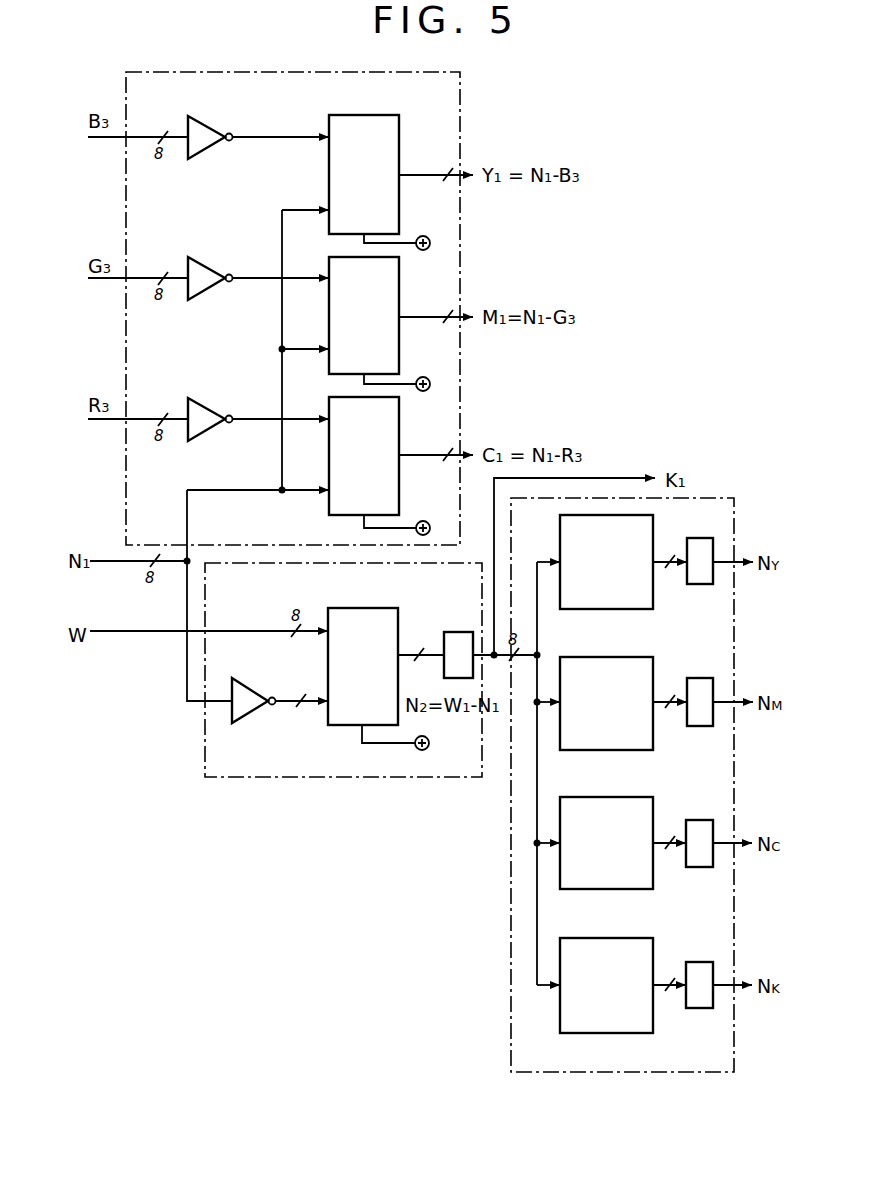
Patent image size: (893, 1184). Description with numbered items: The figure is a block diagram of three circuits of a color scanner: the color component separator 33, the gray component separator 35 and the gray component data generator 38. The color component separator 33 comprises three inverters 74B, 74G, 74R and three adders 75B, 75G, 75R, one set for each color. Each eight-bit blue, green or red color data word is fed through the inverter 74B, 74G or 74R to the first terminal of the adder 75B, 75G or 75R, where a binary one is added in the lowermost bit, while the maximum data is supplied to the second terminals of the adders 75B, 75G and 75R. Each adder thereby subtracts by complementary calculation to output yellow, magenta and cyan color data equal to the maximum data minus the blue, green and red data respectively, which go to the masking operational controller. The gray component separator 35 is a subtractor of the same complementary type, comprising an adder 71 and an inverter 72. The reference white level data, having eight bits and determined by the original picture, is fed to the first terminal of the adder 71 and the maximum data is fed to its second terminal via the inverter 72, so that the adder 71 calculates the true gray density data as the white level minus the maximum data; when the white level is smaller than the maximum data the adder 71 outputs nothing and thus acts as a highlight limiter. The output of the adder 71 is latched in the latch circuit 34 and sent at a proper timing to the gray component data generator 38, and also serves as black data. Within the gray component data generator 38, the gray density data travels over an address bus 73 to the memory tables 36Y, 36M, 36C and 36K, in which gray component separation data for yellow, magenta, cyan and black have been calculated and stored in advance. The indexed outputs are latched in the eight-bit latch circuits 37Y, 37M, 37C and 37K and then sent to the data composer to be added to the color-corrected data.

The color component separator 33 is at (462, 120).
The inverter 74B is at (204, 126).
The inverter 74G is at (204, 267).
The inverter 74R is at (204, 408).
The adder 75B is at (363, 115).
The adder 75G is at (399, 272).
The adder 75R is at (399, 423).
The gray component separator 35 is at (250, 778).
The adder 71 is at (366, 608).
The inverter 72 is at (250, 723).
The latch circuit 34 is at (458, 632).
The gray component data generator 38 is at (509, 890).
The address bus 73 is at (537, 787).
The memory table 36Y is at (651, 609).
The memory table 36M is at (648, 750).
The memory table 36C is at (648, 889).
The memory table 36K is at (645, 1033).
The 8-bit latch circuit 37Y is at (696, 522).
The 8-bit latch circuit 37M is at (699, 678).
The 8-bit latch circuit 37C is at (699, 820).
The 8-bit latch circuit 37K is at (699, 962).